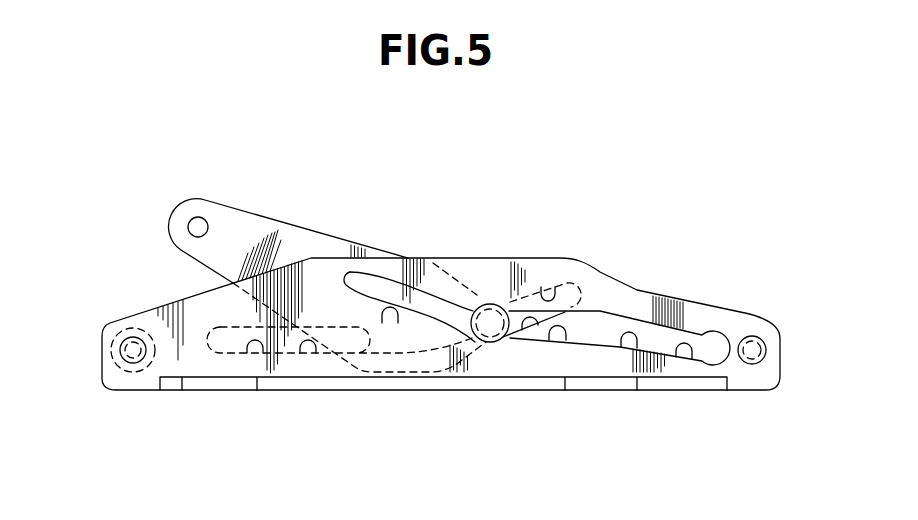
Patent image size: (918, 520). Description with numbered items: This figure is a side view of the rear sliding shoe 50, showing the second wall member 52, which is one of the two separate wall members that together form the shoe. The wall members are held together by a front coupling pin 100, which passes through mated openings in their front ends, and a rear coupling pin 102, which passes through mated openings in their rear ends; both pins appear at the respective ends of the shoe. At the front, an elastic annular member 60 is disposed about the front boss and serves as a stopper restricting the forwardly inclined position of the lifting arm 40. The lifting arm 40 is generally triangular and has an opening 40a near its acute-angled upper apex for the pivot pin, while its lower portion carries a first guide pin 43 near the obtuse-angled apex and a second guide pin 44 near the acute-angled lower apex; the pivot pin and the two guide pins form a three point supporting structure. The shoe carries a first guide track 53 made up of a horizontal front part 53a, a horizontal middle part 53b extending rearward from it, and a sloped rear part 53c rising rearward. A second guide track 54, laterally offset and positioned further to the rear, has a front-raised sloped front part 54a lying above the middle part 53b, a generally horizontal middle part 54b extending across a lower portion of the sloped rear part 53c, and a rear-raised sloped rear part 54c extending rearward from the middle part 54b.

The lifting arm 40 is at (311, 218).
The opening 40a is at (205, 217).
The first guide pin 43 is at (343, 337).
The second guide pin 44 is at (491, 320).
The rear sliding shoe 50 is at (465, 252).
The second wall member 52 is at (658, 297).
The first guide track 53 is at (548, 287).
The horizontal front part 53a is at (247, 358).
The horizontal middle part 53b is at (303, 358).
The sloped rear part 53c is at (523, 332).
The second guide track 54 is at (622, 348).
The front-raised sloped front part 54a is at (402, 320).
The generally horizontal middle part 54b is at (548, 342).
The rear-raised sloped rear part 54c is at (677, 359).
The elastic annular member 60 is at (128, 328).
The front coupling pin 100 is at (137, 363).
The rear coupling pin 102 is at (757, 364).